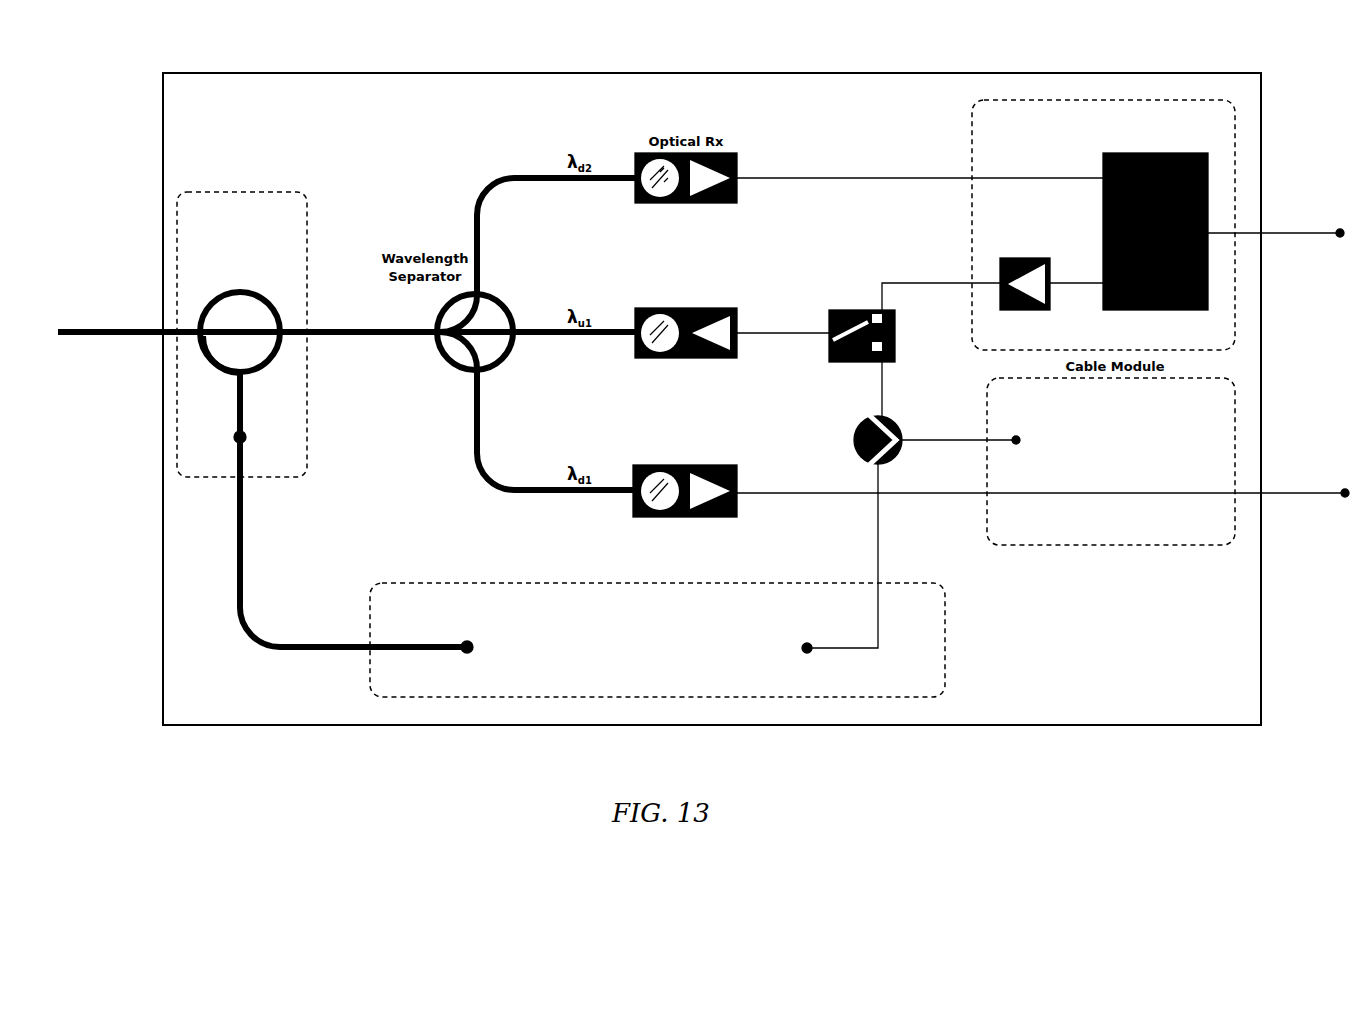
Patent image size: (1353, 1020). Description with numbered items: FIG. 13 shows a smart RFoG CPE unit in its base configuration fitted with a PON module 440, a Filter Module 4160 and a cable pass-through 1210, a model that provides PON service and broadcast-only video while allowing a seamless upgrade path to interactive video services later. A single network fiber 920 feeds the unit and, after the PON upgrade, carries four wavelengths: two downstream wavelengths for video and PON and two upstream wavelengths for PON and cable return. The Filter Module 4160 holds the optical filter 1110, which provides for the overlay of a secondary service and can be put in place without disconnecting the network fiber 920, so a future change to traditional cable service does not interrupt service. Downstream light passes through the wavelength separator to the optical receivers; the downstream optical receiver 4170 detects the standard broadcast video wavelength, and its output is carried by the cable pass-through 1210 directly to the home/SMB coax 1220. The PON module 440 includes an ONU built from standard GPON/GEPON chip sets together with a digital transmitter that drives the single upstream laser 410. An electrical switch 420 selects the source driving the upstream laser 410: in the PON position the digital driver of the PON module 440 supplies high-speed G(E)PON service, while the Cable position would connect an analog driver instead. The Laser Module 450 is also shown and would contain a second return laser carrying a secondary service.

The network fiber 920 is at (147, 340).
The optical filter 1110 is at (258, 238).
The filter module 4160 is at (292, 186).
The upstream laser 410 is at (708, 302).
The optical receiver 4170 is at (712, 428).
The electrical switch 420 is at (873, 262).
The PON module 440 is at (972, 134).
The Laser Module 450 is at (640, 668).
The cable pass-through 1210 is at (1160, 494).
The home/SMB coax 1220 is at (1328, 524).